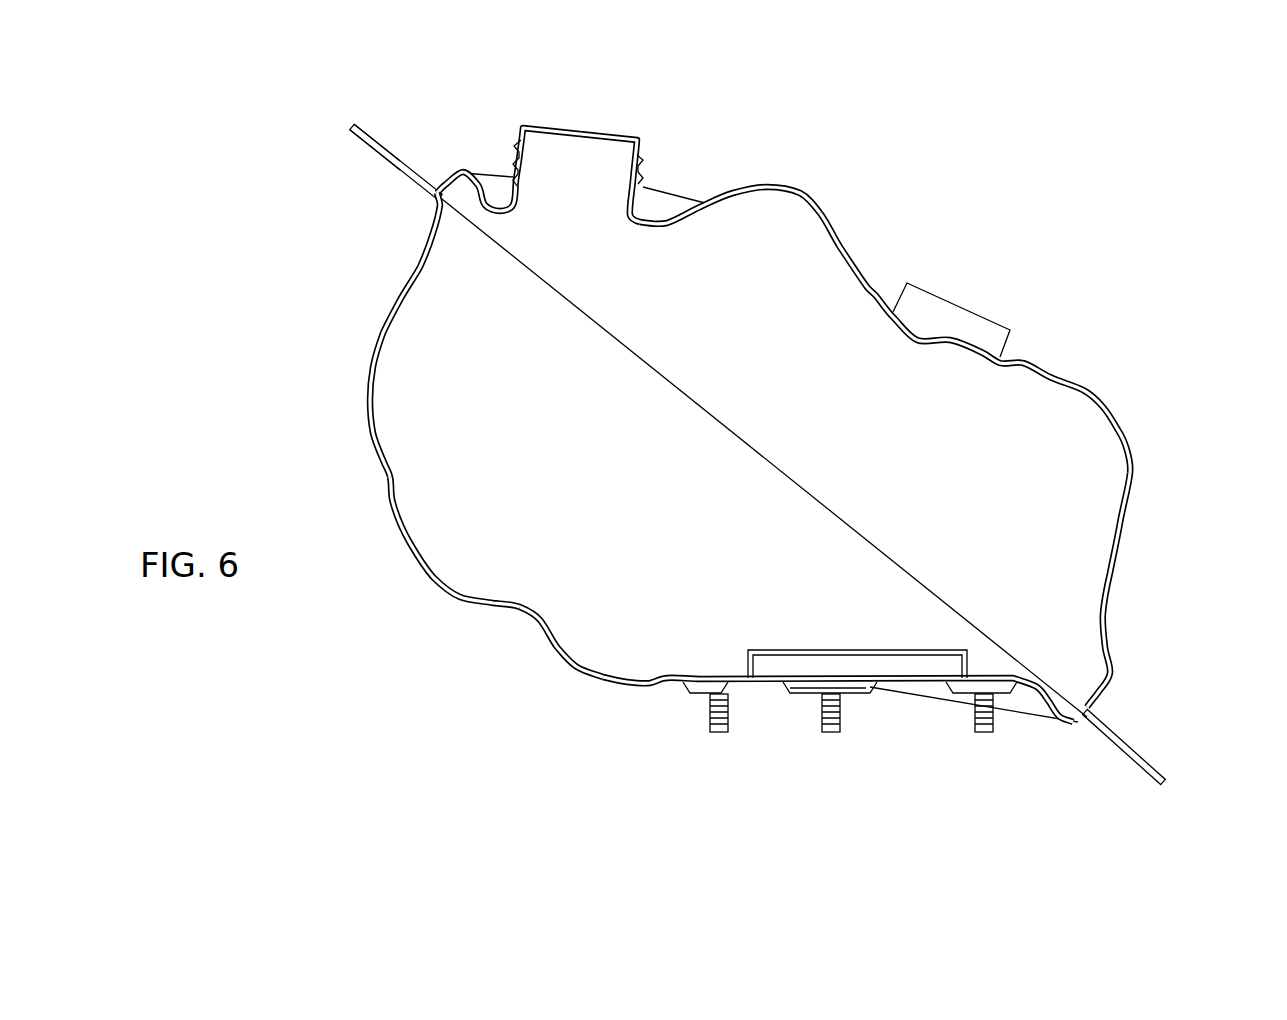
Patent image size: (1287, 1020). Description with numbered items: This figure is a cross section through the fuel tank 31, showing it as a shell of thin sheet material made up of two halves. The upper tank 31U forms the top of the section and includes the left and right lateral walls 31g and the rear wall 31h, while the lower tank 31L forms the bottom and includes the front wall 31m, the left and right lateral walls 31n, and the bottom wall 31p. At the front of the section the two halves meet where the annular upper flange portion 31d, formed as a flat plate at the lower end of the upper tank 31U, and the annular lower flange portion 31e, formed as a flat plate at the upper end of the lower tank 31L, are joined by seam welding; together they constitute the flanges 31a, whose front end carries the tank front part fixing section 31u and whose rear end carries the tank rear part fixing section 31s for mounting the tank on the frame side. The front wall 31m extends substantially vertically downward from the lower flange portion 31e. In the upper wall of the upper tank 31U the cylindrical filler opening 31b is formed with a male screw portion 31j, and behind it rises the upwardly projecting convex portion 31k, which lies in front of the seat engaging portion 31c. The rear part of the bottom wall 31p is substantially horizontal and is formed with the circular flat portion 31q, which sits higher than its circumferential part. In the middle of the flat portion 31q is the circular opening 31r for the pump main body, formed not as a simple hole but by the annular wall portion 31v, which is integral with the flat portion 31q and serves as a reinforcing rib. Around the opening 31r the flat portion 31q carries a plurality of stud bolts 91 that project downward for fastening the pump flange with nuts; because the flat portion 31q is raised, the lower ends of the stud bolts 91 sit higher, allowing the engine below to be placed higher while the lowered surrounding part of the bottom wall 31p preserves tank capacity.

The fuel tank 31 is at (987, 212).
The flanges 31a is at (396, 148).
The filler opening 31b is at (650, 140).
The seat engaging portion 31c is at (963, 323).
The upper flange portion 31d is at (408, 170).
The lower flange portion 31e is at (398, 173).
The lateral walls 31g is at (1000, 430).
The rear wall 31h is at (1123, 537).
The male screw portion 31j is at (517, 130).
The convex portion 31k is at (790, 186).
The lower tank 31L is at (578, 676).
The front wall 31m is at (370, 392).
The lateral walls 31n is at (567, 580).
The bottom wall 31p is at (623, 686).
The flat portion 31q is at (703, 694).
The opening 31r is at (760, 686).
The tank rear part fixing section 31s is at (1138, 742).
The tank front part fixing section 31u is at (358, 149).
The upper tank 31U is at (862, 258).
The annular wall portion 31v is at (967, 657).
The stud bolts 91 is at (720, 734).